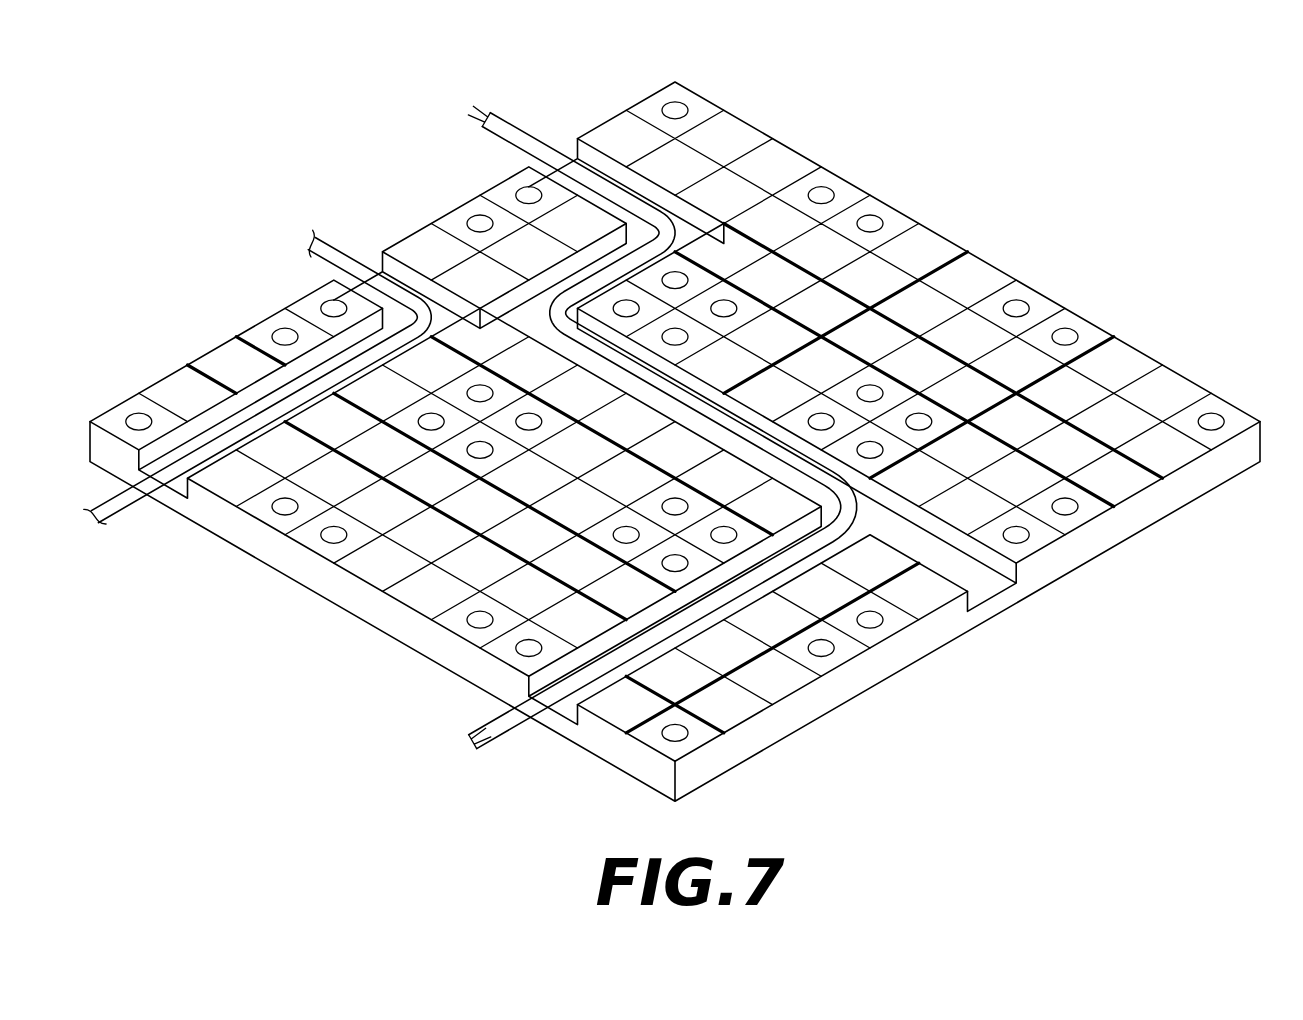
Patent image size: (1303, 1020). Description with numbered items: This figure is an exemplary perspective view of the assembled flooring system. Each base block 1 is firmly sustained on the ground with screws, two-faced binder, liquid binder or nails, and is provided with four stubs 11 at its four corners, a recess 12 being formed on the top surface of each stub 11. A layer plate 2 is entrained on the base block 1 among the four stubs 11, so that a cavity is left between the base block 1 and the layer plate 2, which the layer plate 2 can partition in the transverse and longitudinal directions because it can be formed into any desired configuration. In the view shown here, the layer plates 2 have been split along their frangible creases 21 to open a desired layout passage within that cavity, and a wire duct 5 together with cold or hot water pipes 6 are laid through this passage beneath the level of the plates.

The base block 1 is at (788, 728).
The layer plate 2 is at (1118, 356).
The wire duct 5 is at (534, 148).
The cold/hot water pipes 6 is at (128, 506).
The stub 11 is at (462, 627).
The recess 12 is at (880, 622).
The frangible crease 21 is at (957, 258).